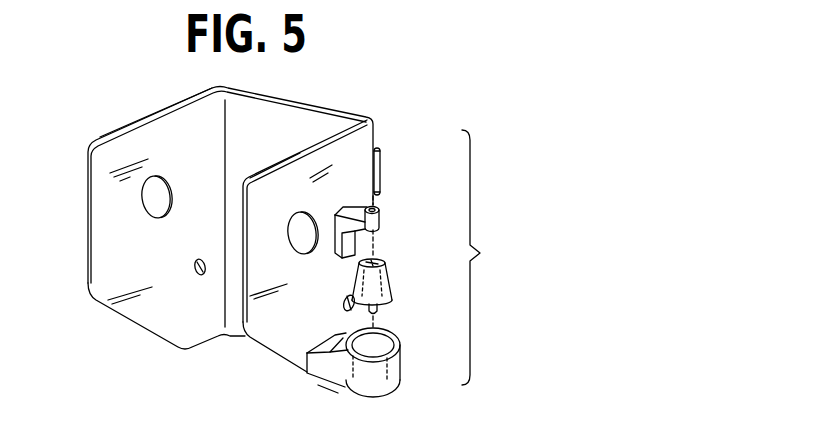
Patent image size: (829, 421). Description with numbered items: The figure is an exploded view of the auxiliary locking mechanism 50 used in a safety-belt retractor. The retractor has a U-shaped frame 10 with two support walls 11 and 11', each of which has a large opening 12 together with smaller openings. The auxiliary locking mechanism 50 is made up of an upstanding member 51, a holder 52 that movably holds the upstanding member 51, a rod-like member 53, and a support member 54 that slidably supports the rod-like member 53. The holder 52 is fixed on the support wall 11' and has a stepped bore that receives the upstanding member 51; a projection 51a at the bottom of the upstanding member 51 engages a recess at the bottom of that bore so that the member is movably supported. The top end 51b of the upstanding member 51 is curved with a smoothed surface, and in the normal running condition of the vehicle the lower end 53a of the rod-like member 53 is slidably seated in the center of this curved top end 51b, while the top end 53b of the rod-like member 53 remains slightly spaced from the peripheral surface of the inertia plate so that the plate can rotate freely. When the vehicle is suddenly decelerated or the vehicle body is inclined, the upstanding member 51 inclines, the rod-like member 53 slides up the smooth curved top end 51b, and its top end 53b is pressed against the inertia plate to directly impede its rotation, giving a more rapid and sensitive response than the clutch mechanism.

The frame 10 is at (345, 111).
The support wall 11 is at (156, 105).
The support wall 11' is at (294, 125).
The large opening 12 is at (143, 208).
The auxiliary locking mechanism 50 is at (523, 271).
The upstanding member 51 is at (392, 286).
The projection 51a is at (380, 310).
The top end 51b is at (386, 262).
The holder 52 is at (396, 372).
The rod-like member 53 is at (381, 172).
The lower end 53a is at (380, 194).
The top end 53b is at (380, 149).
The support member 54 is at (384, 223).